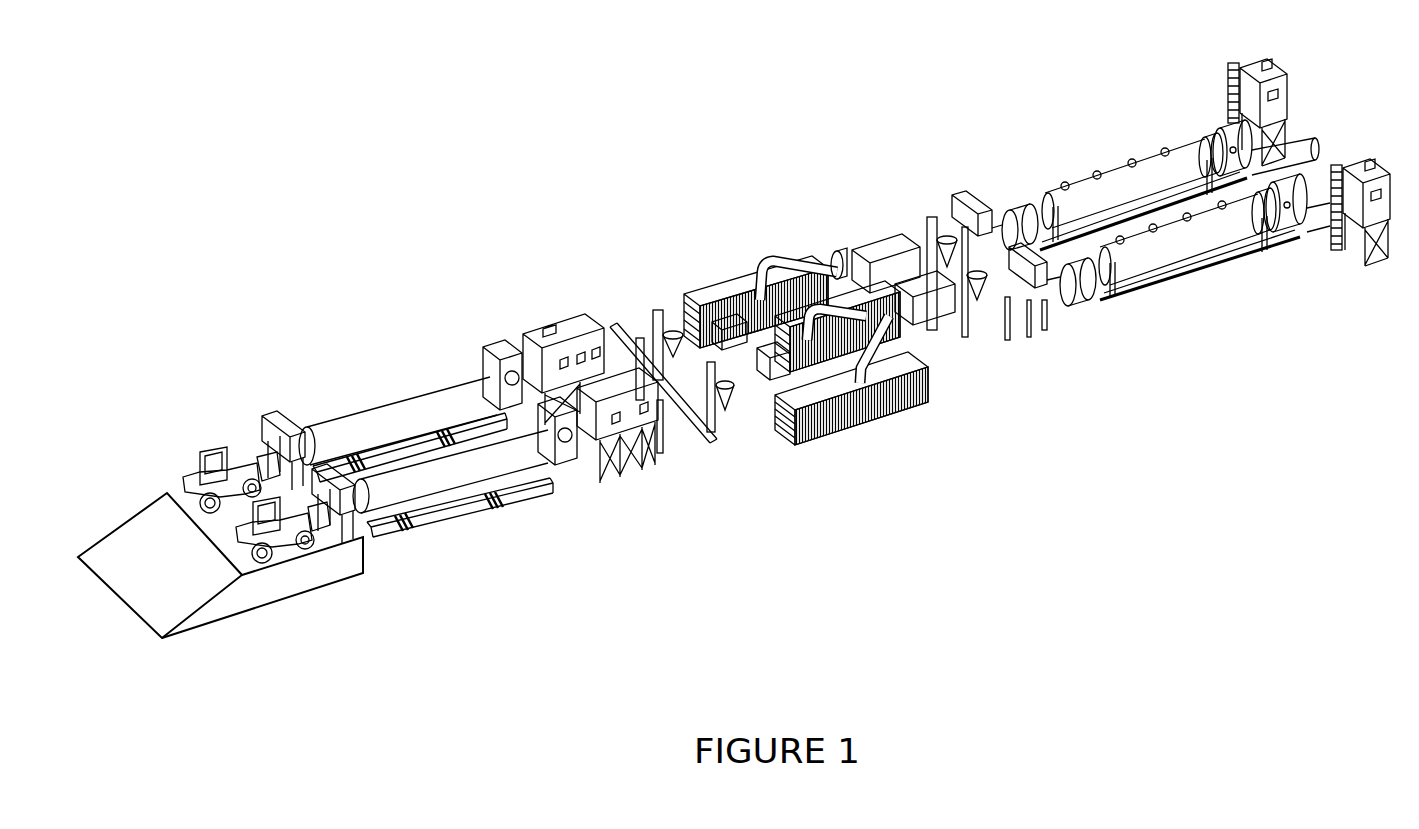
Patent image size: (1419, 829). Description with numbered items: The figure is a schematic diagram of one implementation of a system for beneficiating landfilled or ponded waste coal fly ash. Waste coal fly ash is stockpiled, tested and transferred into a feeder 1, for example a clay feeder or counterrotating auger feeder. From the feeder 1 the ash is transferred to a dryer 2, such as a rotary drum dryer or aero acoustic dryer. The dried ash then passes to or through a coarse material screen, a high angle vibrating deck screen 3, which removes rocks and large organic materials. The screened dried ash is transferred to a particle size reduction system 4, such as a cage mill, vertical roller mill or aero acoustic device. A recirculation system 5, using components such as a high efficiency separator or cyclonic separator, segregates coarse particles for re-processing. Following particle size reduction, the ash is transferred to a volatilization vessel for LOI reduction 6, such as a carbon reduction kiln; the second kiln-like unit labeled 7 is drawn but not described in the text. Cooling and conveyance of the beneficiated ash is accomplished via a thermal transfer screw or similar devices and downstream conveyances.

The feeder 1 is at (220, 521).
The dryer 2 is at (438, 438).
The high angle vibrating deck screen 3 is at (613, 416).
The particle size reduction system 4 is at (806, 368).
The recirculation system 5 is at (893, 258).
The volatilization vessel for LOI reduction 6 is at (1135, 185).
The second rotary kiln 7 is at (1169, 240).